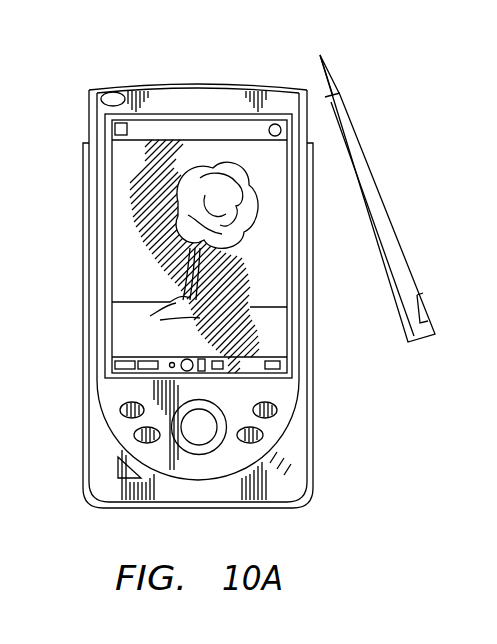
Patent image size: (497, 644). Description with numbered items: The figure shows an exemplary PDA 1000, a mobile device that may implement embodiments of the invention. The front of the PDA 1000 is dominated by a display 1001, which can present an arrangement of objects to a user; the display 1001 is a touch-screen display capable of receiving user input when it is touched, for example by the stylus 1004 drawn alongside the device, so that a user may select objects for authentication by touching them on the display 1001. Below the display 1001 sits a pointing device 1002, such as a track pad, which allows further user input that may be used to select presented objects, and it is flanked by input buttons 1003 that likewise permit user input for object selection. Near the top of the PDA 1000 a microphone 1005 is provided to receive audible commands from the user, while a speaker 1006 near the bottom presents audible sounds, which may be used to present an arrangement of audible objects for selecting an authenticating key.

The PDA 1000 is at (266, 62).
The display 1001 is at (123, 218).
The pointing device 1002 is at (200, 440).
The input buttons 1003 is at (134, 436).
The stylus 1004 is at (387, 217).
The microphone 1005 is at (114, 92).
The speaker 1006 is at (287, 477).